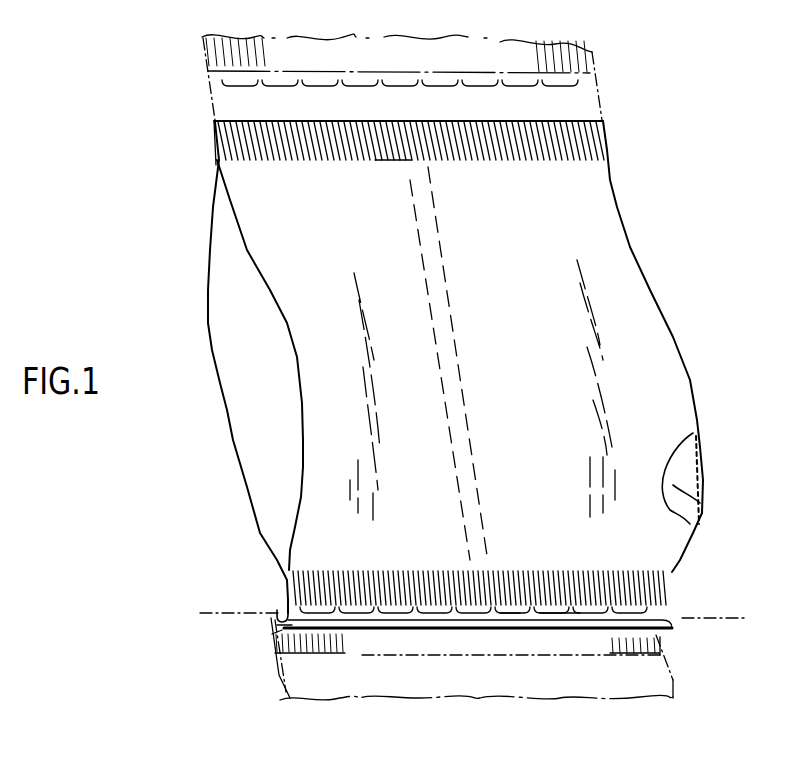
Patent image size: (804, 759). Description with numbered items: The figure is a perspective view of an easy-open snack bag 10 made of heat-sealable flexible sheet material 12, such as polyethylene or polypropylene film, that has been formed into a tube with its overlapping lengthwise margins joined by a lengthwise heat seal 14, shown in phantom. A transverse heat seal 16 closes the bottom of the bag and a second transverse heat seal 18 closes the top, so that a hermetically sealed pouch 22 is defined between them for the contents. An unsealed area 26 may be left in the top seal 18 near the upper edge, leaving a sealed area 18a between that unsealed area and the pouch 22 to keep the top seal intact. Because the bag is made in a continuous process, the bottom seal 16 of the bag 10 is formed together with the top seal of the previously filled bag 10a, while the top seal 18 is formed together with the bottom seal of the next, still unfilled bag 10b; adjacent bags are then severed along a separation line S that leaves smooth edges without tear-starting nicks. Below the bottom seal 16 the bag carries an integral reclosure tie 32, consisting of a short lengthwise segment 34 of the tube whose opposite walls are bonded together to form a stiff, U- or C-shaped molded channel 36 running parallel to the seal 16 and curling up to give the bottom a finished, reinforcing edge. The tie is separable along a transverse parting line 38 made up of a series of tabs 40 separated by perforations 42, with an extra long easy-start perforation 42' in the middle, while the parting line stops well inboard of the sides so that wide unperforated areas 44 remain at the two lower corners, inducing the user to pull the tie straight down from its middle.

The bag 10 is at (196, 220).
The previously filled bag 10a is at (684, 690).
The next unfilled bag 10b is at (608, 47).
The flexible sheet material 12 is at (237, 350).
The lengthwise heat seal 14 is at (440, 377).
The bottom transverse heat seal 16 is at (585, 59).
The top transverse heat seal 18 is at (597, 142).
The sealed area 18a is at (390, 158).
The hermetically sealed pouch 22 is at (698, 506).
The unsealed area 26 is at (435, 125).
The reclosure tie 32 is at (190, 100).
The lengthwise segment 34 is at (278, 620).
The molded channel 36 is at (288, 625).
The parting line 38 is at (388, 631).
The tabs 40 is at (465, 617).
The perforations 42 is at (556, 649).
The easy-start perforation 42' is at (498, 649).
The unperforated areas 44 is at (675, 618).
The separation line S is at (218, 613).